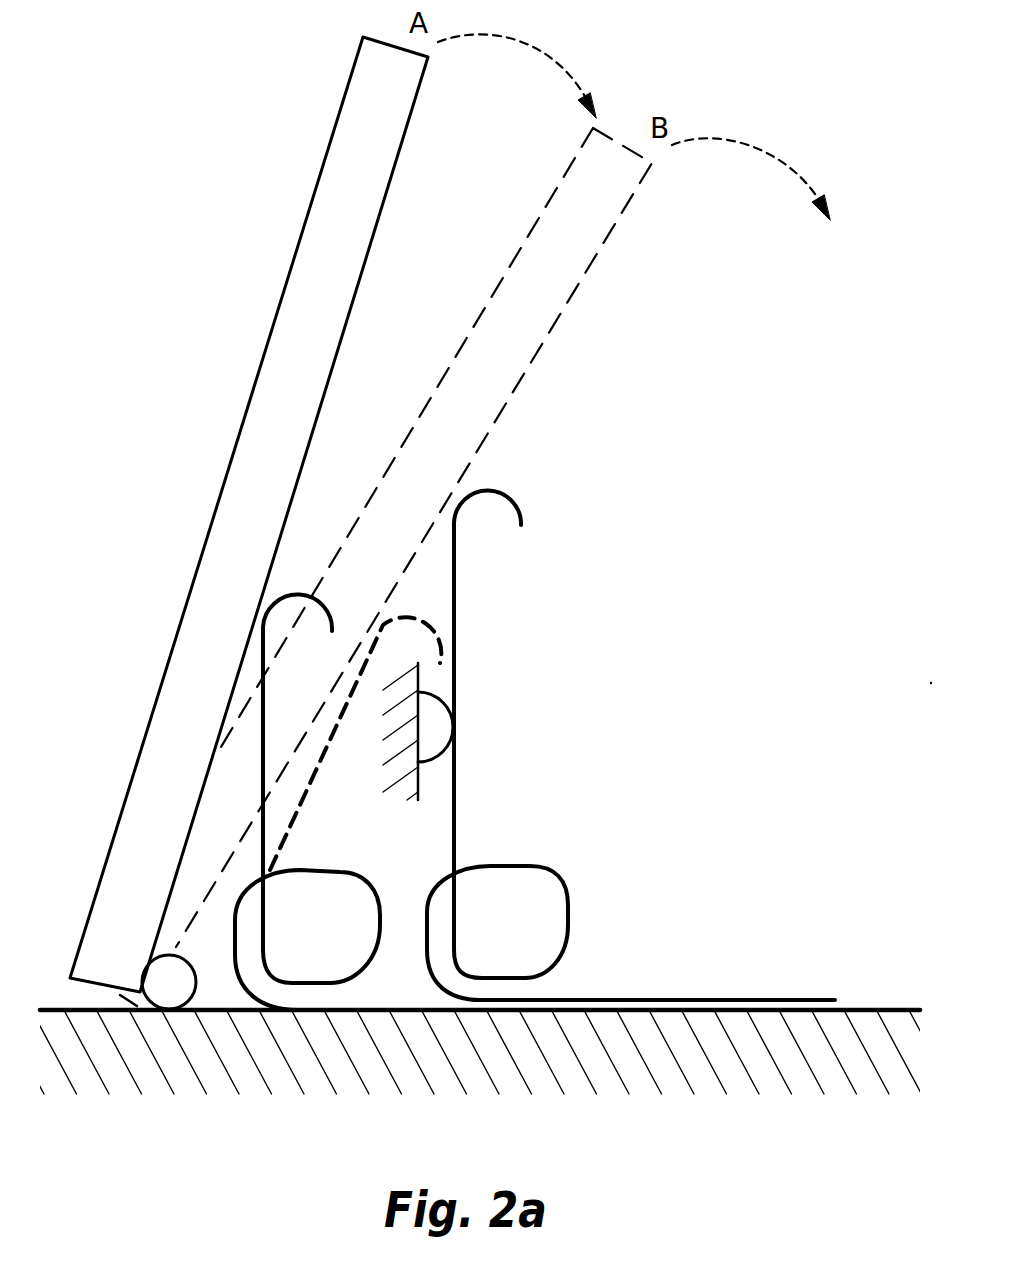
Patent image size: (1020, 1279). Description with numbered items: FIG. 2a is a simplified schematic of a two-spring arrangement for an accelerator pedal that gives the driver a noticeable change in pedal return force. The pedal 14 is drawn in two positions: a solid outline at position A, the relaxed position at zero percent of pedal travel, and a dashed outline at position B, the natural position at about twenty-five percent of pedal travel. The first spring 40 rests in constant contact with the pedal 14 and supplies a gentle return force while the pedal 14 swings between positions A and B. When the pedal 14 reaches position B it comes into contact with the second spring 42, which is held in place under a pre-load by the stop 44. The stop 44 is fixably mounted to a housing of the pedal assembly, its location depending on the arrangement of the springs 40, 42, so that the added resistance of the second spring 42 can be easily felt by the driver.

The pedal 14 is at (280, 305).
The spring 40 is at (308, 870).
The second spring 42 is at (532, 867).
The stop 44 is at (433, 690).